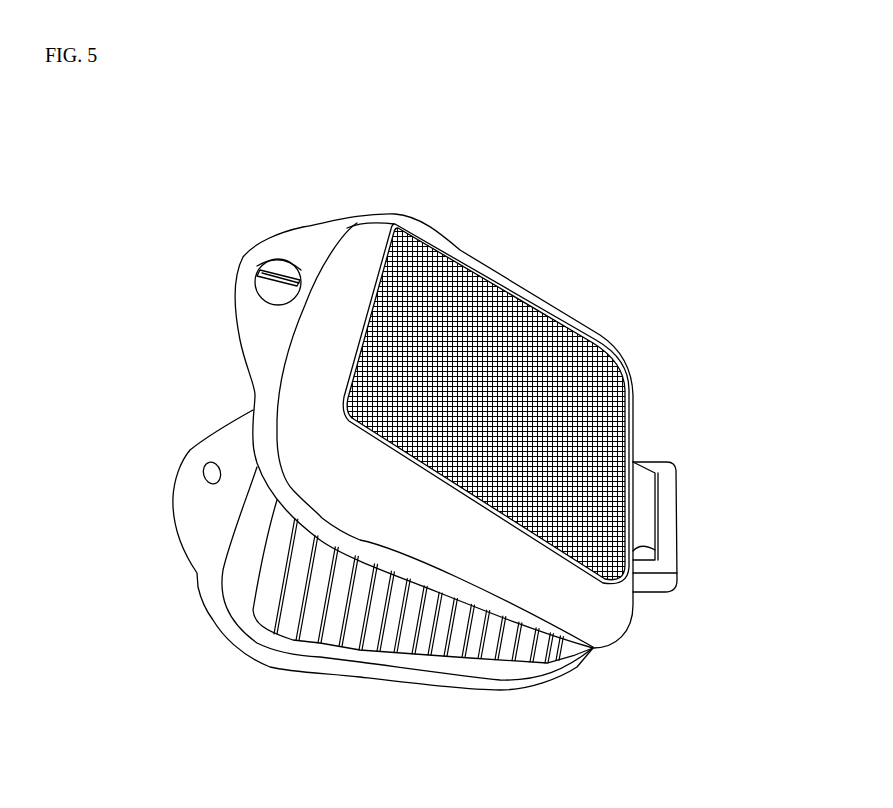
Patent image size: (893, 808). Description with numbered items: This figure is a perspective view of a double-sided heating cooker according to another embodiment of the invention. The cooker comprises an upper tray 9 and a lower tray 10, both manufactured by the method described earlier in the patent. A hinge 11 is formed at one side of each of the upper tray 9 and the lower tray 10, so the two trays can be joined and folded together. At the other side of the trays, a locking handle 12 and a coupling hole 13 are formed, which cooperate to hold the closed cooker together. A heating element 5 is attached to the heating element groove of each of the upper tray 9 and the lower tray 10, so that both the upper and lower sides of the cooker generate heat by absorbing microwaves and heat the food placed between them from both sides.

The heating element 5 is at (470, 340).
The upper tray 9 is at (355, 258).
The lower tray 10 is at (247, 582).
The hinge 11 is at (641, 522).
The locking handle 12 is at (275, 268).
The coupling hole 13 is at (210, 478).